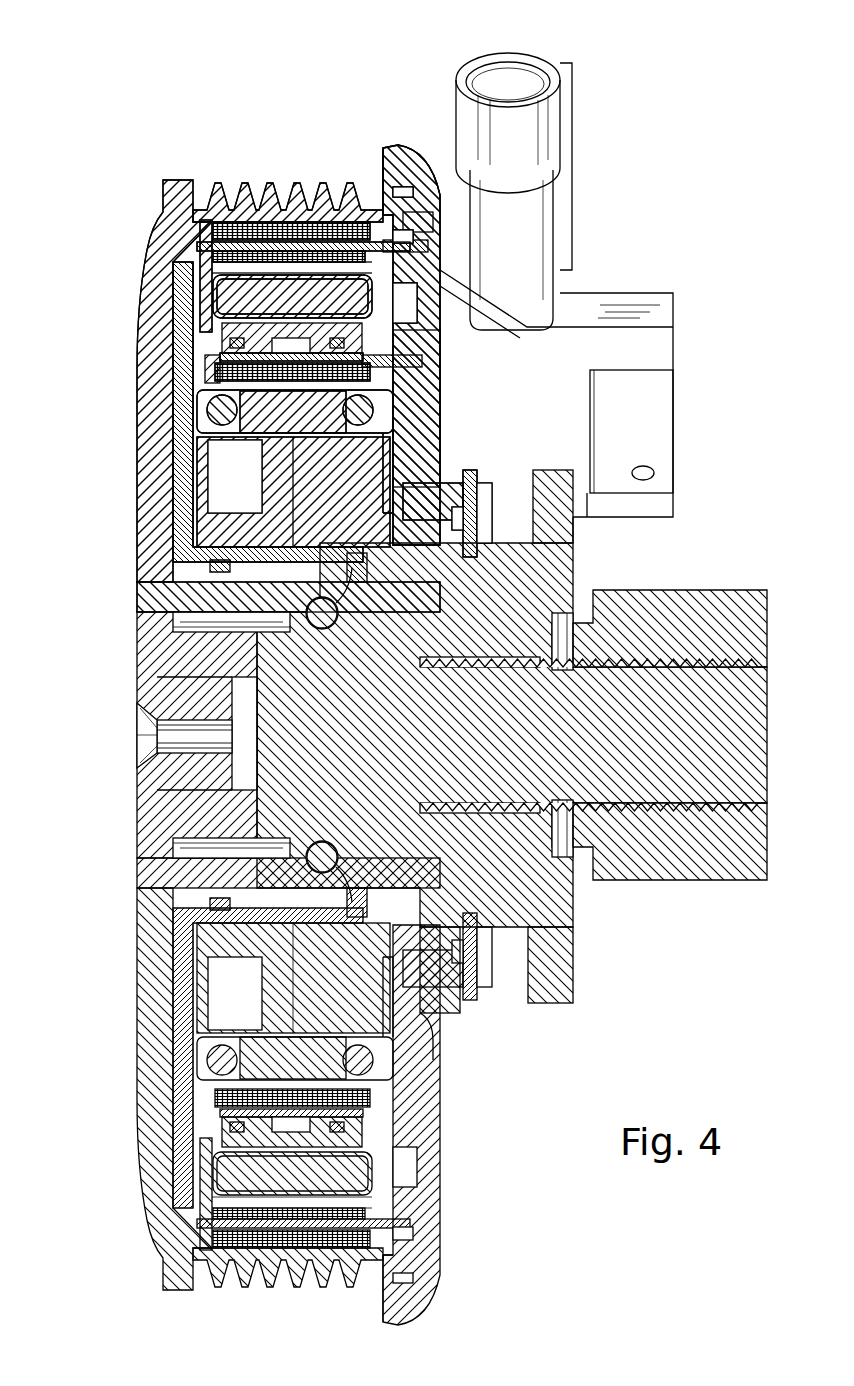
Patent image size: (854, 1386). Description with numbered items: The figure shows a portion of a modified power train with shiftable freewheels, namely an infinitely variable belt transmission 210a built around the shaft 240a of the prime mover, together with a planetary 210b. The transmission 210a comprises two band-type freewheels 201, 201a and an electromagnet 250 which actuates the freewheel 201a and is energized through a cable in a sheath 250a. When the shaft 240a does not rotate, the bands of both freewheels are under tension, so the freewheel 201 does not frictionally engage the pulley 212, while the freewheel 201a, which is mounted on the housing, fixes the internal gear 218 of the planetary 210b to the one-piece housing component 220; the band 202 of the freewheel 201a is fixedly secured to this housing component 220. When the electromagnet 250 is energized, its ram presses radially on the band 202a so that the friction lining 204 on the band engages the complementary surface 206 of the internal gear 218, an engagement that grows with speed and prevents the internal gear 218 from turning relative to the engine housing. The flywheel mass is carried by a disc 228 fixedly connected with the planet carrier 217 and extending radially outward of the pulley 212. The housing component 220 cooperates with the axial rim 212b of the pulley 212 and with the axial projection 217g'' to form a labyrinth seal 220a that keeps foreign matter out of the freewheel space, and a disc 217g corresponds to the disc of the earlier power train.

The freewheel 201 is at (200, 220).
The freewheel 201a is at (205, 366).
The band 202 is at (270, 185).
The band 202a is at (420, 367).
The friction lining 204 is at (312, 210).
The complementary surface 206 is at (245, 213).
The infinitely variable belt transmission 210a is at (632, 158).
The planetary 210b is at (126, 604).
The pulley 212 is at (155, 503).
The axial extension or rim 212b is at (372, 185).
The planet carrier 217 is at (553, 570).
The disc 217g is at (201, 412).
The axial projection 217g'' is at (531, 256).
The internal gear 218 is at (333, 400).
The housing component 220 is at (420, 345).
The labyrinth seal 220a is at (418, 214).
The disc 228 is at (553, 972).
The shaft 240a is at (710, 604).
The electromagnet 250 is at (297, 296).
The sheath 250a is at (530, 72).